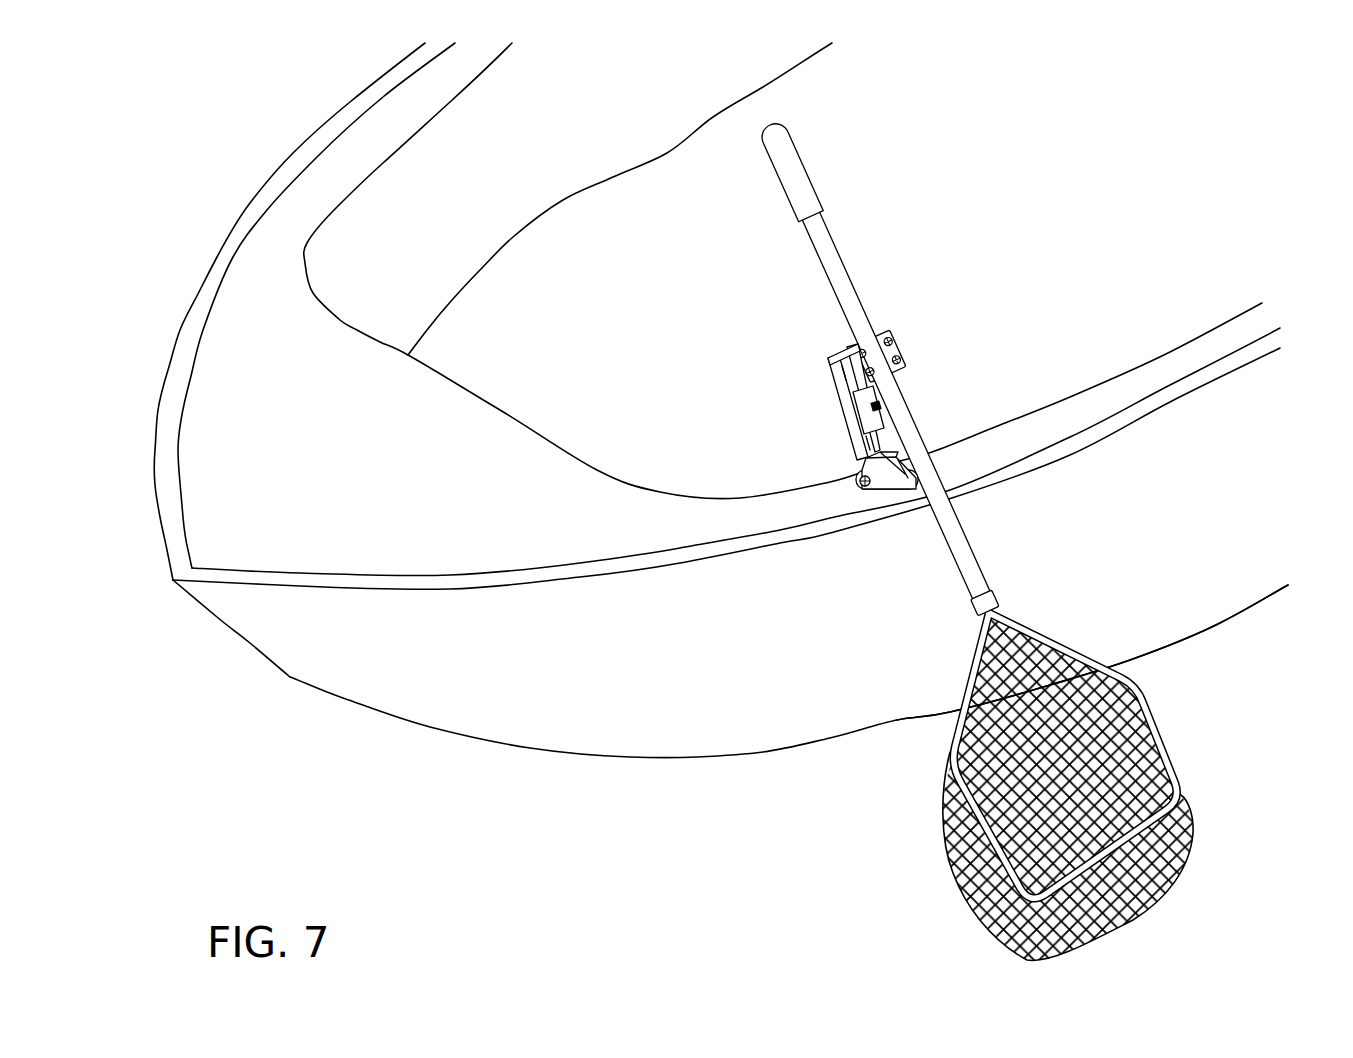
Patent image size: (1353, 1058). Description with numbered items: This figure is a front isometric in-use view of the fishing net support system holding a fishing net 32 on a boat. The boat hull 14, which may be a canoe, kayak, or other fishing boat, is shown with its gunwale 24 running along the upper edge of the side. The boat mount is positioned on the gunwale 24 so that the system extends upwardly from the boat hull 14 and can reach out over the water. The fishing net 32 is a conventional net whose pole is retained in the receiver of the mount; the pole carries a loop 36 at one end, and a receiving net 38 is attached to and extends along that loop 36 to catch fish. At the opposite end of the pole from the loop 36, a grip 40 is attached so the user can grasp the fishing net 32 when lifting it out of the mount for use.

The boat hull 14 is at (1228, 583).
The gunwale 24 is at (1114, 405).
The fishing net 32 is at (952, 543).
The loop 36 is at (1160, 760).
The receiving net 38 is at (1162, 895).
The grip 40 is at (793, 168).